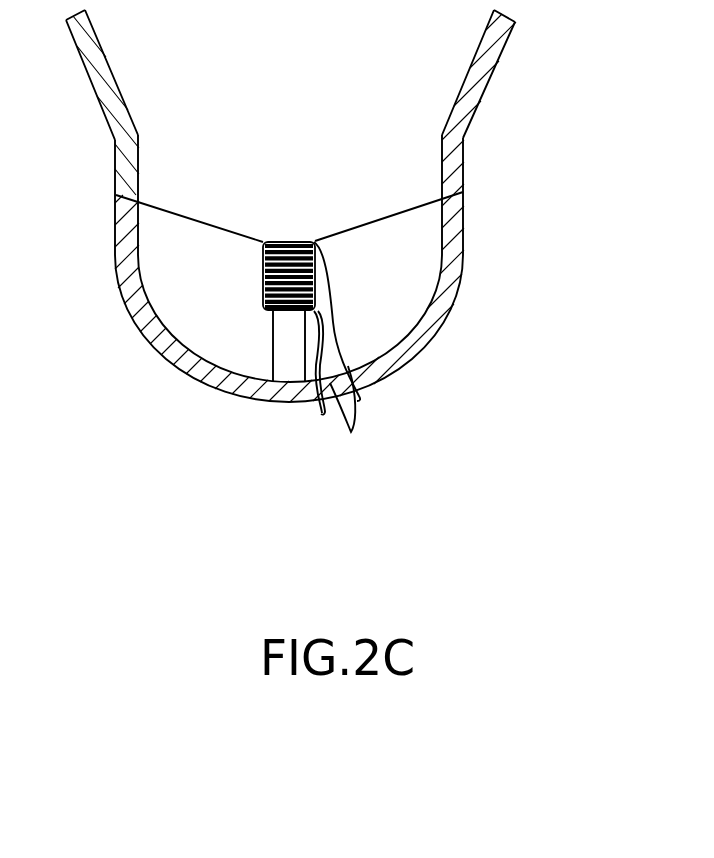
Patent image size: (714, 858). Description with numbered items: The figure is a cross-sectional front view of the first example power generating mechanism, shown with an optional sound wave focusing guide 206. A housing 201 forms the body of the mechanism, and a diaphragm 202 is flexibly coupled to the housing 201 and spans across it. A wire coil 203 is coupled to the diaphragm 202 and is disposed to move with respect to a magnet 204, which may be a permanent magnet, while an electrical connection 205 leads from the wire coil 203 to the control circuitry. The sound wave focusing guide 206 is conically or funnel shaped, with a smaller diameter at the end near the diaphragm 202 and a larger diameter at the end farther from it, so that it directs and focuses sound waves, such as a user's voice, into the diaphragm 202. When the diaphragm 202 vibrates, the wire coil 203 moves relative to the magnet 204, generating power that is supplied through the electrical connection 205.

The housing 201 is at (425, 334).
The diaphragm 202 is at (366, 223).
The wire coil 203 is at (263, 281).
The magnet 204 is at (273, 340).
The electrical connection 205 is at (343, 354).
The sound wave focusing guide 206 is at (484, 89).